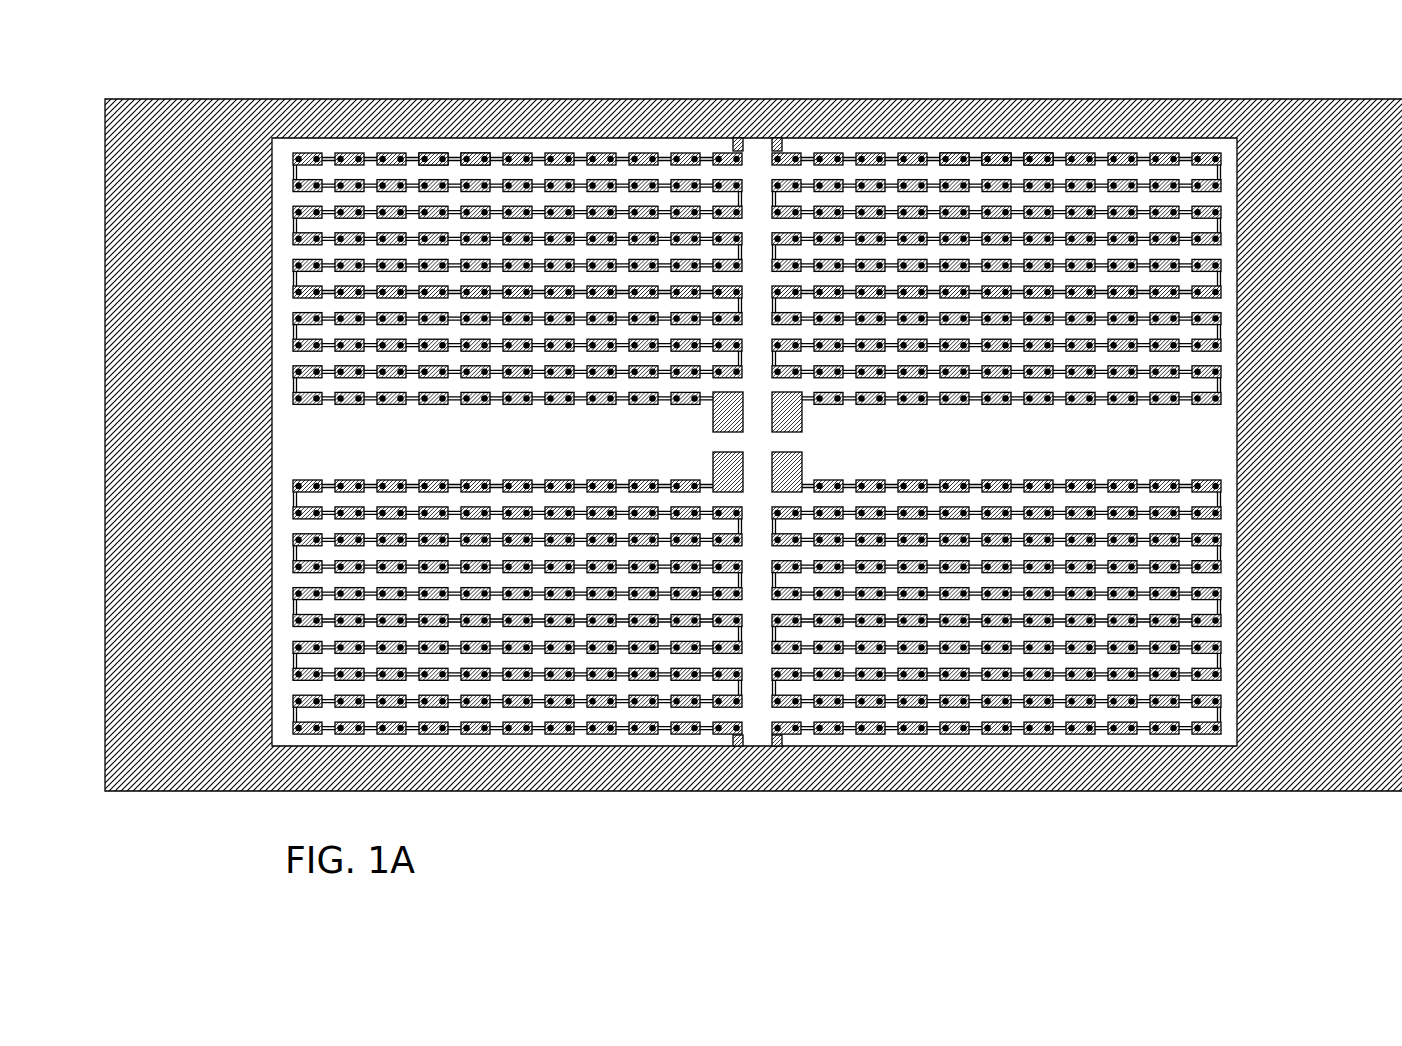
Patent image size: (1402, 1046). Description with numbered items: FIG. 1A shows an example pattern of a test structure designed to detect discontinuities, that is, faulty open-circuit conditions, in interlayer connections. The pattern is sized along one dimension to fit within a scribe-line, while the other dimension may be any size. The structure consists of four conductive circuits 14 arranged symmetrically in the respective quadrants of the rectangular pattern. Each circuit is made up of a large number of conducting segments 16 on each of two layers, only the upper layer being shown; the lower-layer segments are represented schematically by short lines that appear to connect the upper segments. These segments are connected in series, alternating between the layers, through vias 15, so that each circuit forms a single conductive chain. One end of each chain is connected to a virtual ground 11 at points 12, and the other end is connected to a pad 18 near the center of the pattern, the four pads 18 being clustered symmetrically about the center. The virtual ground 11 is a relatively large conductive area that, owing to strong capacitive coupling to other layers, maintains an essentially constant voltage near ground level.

The virtual ground 11 is at (229, 158).
The connection points 12 is at (773, 151).
The conductive circuits 14 is at (637, 386).
The vias 15 is at (488, 155).
The conducting segments 16 is at (1043, 157).
The pad 18 is at (797, 470).